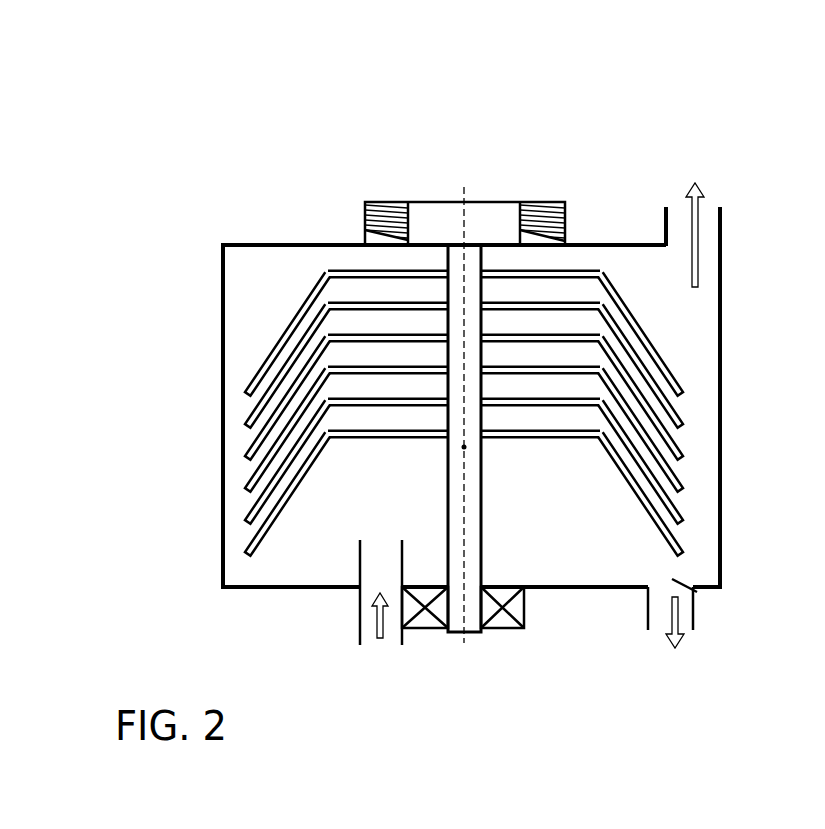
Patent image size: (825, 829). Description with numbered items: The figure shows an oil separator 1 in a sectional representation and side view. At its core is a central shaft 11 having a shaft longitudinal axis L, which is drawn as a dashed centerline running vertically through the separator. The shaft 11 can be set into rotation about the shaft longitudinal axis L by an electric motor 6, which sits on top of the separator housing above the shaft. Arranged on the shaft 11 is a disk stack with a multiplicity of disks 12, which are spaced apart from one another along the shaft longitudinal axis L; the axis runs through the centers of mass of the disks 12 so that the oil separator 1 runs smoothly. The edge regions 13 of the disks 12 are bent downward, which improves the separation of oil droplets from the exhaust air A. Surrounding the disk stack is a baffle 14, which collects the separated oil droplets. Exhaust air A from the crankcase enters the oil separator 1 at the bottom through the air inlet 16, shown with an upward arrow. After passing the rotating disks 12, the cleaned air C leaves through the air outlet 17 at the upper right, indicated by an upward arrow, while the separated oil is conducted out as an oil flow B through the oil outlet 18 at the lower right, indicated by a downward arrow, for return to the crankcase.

The oil separator 1 is at (379, 136).
The electric motor 6 is at (502, 214).
The central shaft 11 is at (486, 474).
The disks 12 is at (343, 268).
The edge regions 13 is at (285, 338).
The baffle 14 is at (221, 405).
The air inlet 16 is at (370, 589).
The air outlet 17 is at (703, 223).
The oil outlet 18 is at (700, 596).
The shaft longitudinal axis L is at (462, 448).
The exhaust air A is at (379, 641).
The oil flow B is at (674, 619).
The cleaned air C is at (686, 201).